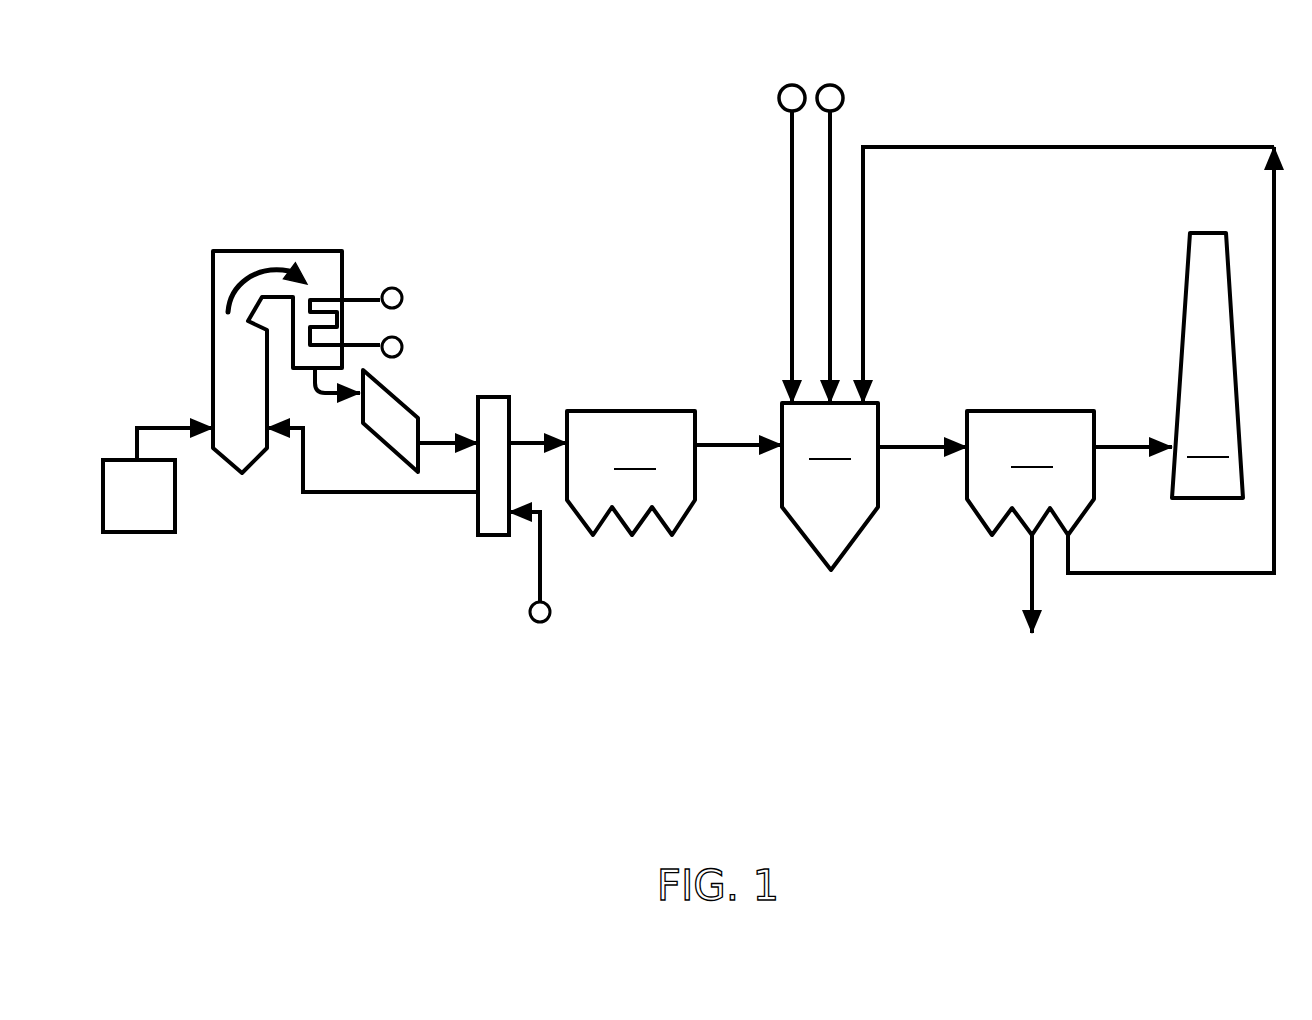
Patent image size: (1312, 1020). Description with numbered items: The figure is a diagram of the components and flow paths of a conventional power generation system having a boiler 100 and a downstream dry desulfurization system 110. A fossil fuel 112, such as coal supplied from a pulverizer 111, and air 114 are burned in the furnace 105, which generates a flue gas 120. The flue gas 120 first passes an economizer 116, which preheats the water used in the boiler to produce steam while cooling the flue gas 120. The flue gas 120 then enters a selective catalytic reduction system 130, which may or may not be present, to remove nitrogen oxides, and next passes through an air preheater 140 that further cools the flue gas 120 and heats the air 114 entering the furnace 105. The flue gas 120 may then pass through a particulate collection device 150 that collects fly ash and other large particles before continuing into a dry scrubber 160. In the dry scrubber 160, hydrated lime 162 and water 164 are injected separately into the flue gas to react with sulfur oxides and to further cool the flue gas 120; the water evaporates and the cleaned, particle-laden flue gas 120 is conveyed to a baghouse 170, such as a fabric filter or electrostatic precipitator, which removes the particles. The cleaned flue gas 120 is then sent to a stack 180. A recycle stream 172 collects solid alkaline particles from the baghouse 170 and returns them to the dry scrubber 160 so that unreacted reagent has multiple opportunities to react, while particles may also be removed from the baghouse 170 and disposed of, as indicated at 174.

The boiler 100 is at (322, 112).
The furnace 105 is at (232, 347).
The desulfurization system 110 is at (614, 226).
The pulverizer 111 is at (120, 533).
The fossil fuel 112 is at (162, 427).
The air 114 is at (383, 493).
The economizer 116 is at (349, 296).
The flue gas 120 is at (244, 266).
The selective catalytic reduction (SCR) system 130 is at (400, 397).
The air preheater 140 is at (498, 392).
The particulate collection device 150 is at (631, 473).
The dry scrubber 160 is at (830, 486).
The hydrated lime 162 is at (779, 102).
The water 164 is at (842, 98).
The baghouse 170 is at (1030, 473).
The recycle stream 172 is at (1183, 142).
The particle removal and disposal 174 is at (1027, 580).
The stack 180 is at (1207, 365).